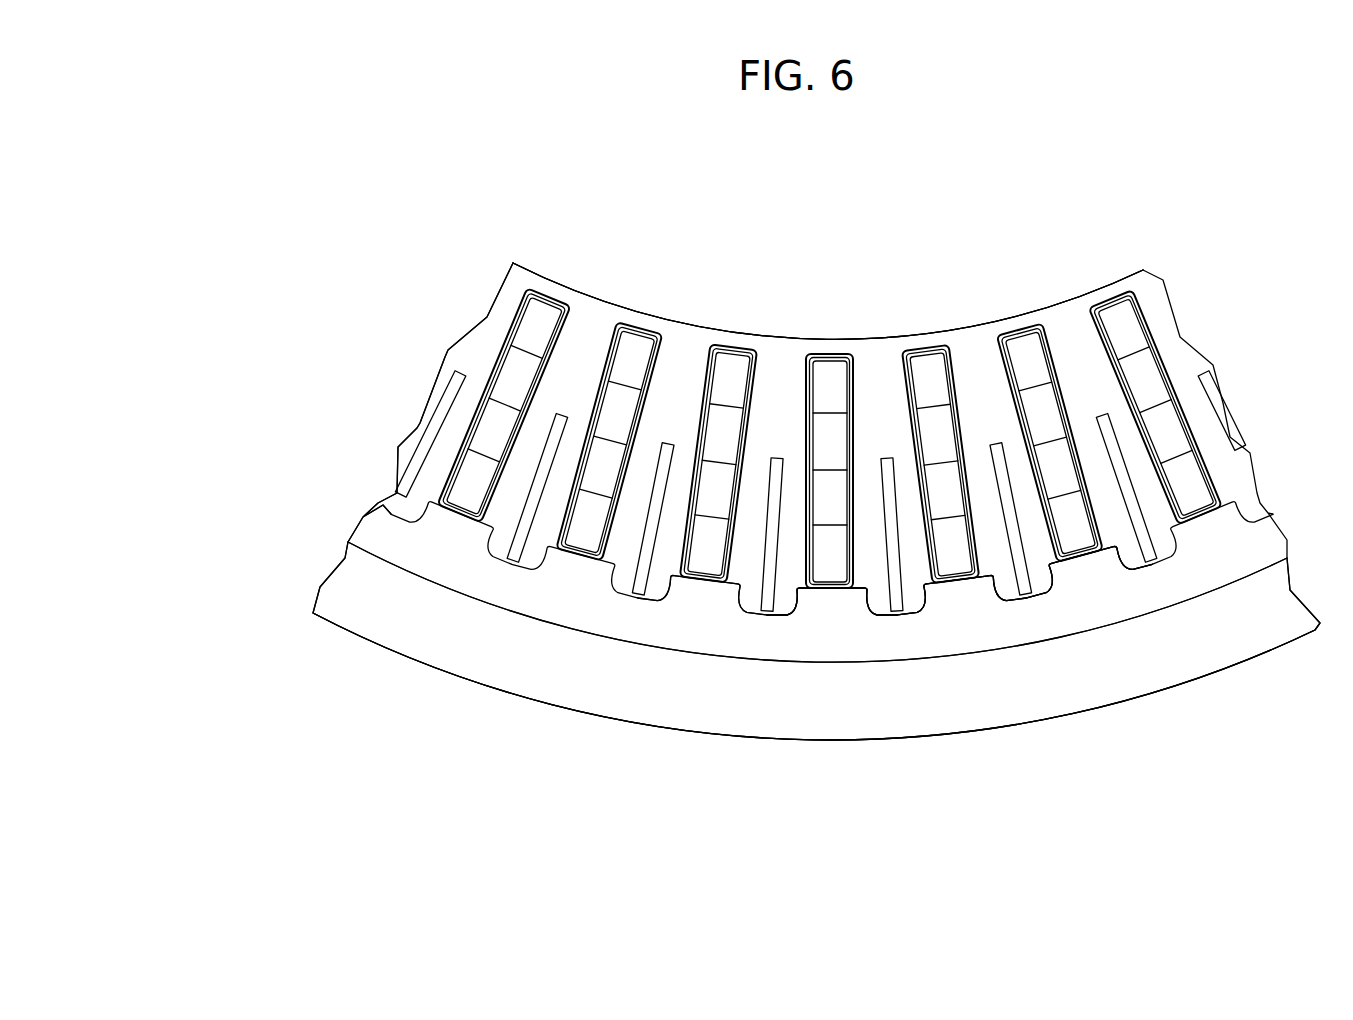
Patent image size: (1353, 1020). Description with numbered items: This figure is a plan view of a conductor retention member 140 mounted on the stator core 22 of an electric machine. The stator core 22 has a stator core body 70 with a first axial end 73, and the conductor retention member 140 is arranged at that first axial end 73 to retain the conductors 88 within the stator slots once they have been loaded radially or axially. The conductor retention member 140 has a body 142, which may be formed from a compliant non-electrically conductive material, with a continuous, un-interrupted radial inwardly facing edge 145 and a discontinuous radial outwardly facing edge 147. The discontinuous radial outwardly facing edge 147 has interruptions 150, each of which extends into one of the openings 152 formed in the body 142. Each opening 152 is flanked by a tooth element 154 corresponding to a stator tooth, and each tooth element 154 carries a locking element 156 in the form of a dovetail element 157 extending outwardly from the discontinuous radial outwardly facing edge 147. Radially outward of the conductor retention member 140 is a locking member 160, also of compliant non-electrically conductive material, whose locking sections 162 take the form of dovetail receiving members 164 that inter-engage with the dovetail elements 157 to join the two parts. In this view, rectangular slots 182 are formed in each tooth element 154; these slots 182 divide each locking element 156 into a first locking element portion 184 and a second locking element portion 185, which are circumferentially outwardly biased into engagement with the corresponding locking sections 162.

The stator core 22 is at (300, 568).
The stator core body 70 is at (1166, 708).
The first axial end 73 is at (620, 707).
The conductors 88 is at (1170, 435).
The conductor retention member 140 is at (892, 296).
The body 142 is at (687, 307).
The radial inwardly facing edge 145 is at (762, 335).
The discontinuous radial outwardly facing edge 147 is at (1094, 592).
The interruptions 150 is at (1092, 577).
The openings 152 is at (945, 588).
The tooth element 154 is at (1032, 552).
The locking element 156 is at (803, 608).
The dovetail element 157 is at (997, 590).
The locking member 160 is at (350, 516).
The locking sections 162 is at (653, 583).
The dovetail receiving members 164 is at (600, 578).
The slots 182 is at (780, 460).
The first locking element portion 184 is at (787, 618).
The second locking element portion 185 is at (735, 614).